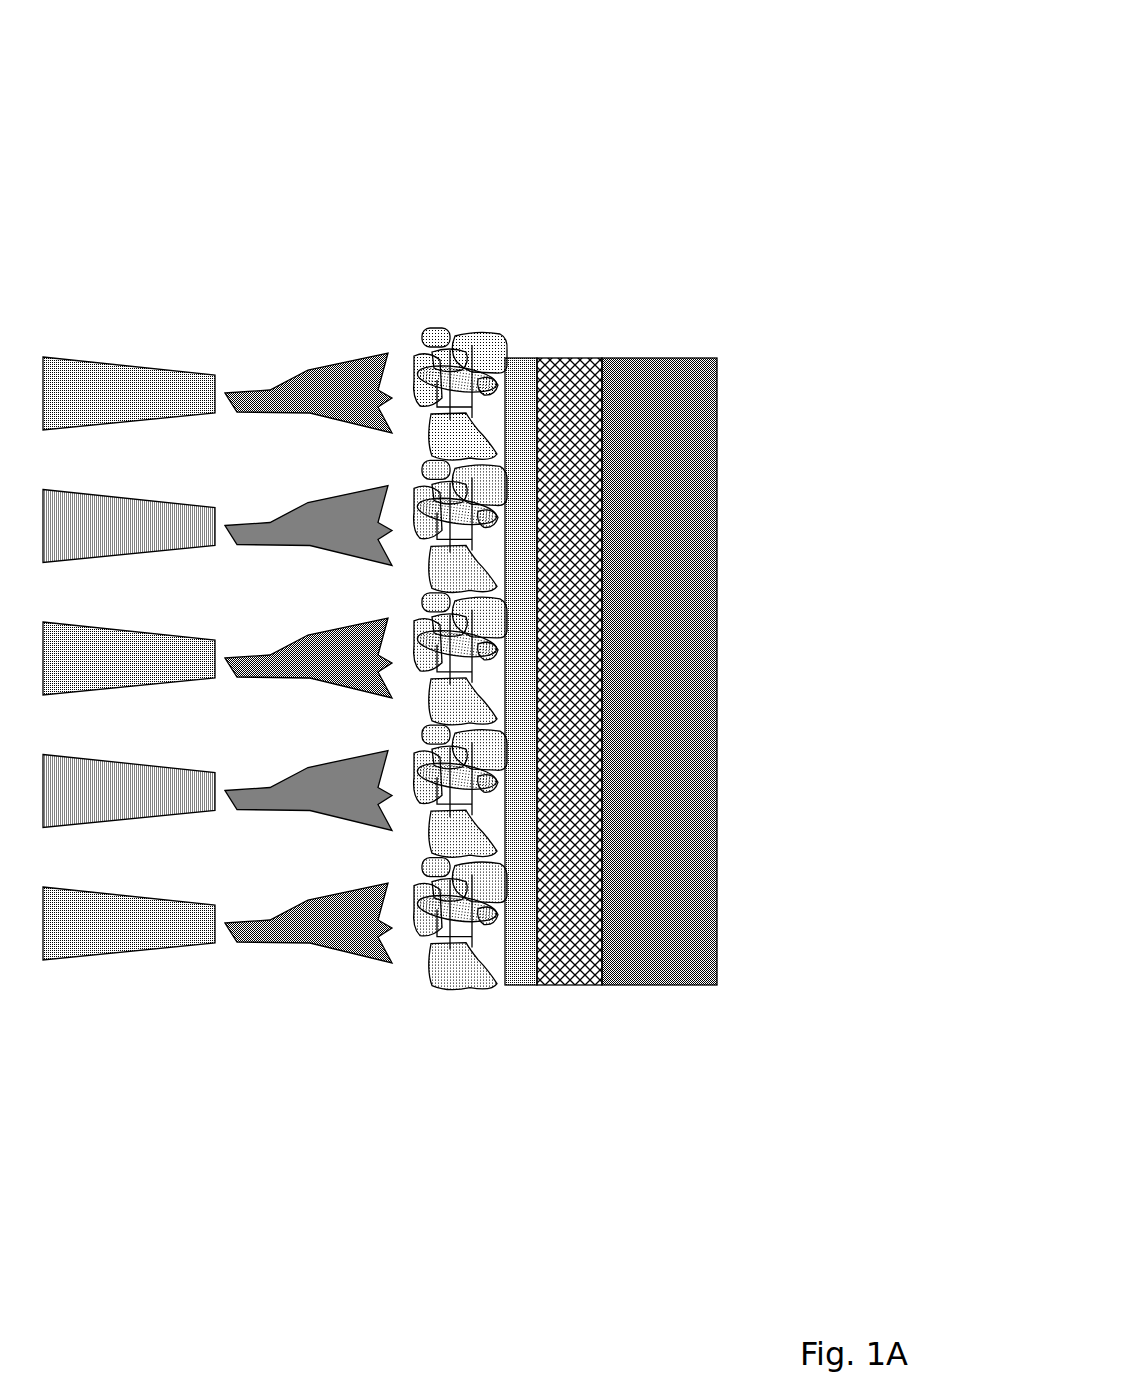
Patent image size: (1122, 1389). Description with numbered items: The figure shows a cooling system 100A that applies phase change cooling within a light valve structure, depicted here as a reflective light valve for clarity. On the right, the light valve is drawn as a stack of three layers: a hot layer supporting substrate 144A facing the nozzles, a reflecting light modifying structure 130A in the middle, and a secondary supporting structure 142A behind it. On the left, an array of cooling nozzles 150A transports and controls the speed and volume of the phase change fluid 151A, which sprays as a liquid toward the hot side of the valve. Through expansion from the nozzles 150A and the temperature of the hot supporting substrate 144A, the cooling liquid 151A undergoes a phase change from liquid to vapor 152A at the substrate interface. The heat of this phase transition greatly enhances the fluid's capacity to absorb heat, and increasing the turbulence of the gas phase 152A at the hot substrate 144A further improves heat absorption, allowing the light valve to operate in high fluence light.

The cooling system 100A is at (735, 68).
The reflecting light modifying structure 130A is at (586, 331).
The secondary supporting structure 142A is at (668, 331).
The hot layer supporting substrate 144A is at (514, 332).
The cooling nozzles 150A is at (164, 963).
The phase change fluid 151A is at (324, 968).
The vapor 152A is at (429, 991).